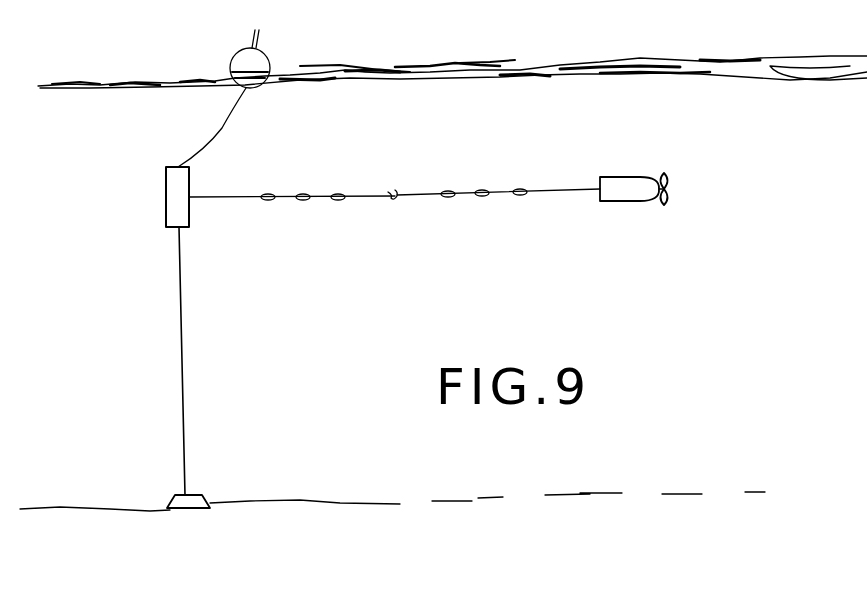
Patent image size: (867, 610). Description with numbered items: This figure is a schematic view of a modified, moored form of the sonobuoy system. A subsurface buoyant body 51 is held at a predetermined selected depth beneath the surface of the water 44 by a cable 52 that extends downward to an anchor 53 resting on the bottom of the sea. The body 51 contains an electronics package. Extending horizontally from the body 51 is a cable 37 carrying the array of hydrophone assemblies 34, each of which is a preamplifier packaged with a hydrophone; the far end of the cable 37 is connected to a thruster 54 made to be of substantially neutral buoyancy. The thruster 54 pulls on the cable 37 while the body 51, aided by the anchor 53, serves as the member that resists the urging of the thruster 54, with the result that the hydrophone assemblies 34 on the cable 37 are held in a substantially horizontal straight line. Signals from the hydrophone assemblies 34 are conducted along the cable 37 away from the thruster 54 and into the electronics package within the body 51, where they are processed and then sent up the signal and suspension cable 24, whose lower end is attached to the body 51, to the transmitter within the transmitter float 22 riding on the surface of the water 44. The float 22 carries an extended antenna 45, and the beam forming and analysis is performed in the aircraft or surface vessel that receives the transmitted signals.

The transmitter float 22 is at (268, 60).
The signal and suspension cable 24 is at (228, 125).
The hydrophone assemblies 34 is at (338, 194).
The cable 37 is at (420, 186).
The water 44 is at (372, 68).
The antenna 45 is at (258, 40).
The subsurface buoyant body 51 is at (166, 172).
The cable 52 is at (184, 300).
The anchor 53 is at (200, 492).
The thruster 54 is at (610, 176).